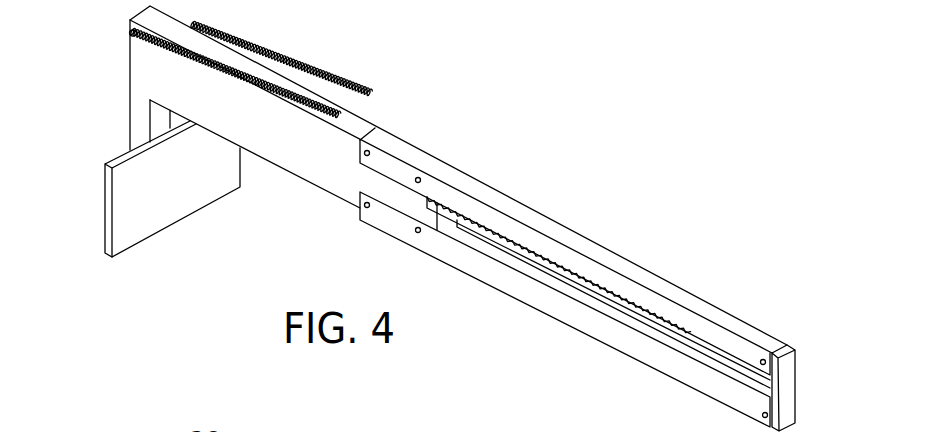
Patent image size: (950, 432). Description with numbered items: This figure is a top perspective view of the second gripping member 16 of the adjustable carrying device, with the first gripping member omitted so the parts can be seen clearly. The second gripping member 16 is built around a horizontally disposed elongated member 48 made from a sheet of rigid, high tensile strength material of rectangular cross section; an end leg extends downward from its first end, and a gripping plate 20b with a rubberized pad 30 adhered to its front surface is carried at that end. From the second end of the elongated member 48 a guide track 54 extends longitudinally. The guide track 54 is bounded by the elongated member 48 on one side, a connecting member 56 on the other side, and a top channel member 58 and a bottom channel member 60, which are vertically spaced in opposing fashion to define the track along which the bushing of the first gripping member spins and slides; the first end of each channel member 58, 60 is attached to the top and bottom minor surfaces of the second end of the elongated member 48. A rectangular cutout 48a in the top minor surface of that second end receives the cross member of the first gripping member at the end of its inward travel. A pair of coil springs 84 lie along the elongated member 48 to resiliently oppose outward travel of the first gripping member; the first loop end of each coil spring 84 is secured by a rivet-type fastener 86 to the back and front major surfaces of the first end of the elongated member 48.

The second gripping member 16 is at (452, 146).
The gripping plate 20b is at (108, 203).
The rubberized pad 30 is at (123, 246).
The elongated member 48 is at (130, 88).
The rectangular cutout 48a is at (428, 202).
The guide track 54 is at (654, 330).
The connecting member 56 is at (796, 388).
The top channel member 58 is at (583, 238).
The bottom channel member 60 is at (546, 309).
The coil spring 84 is at (316, 118).
The rivet-type fastener 86 is at (130, 33).